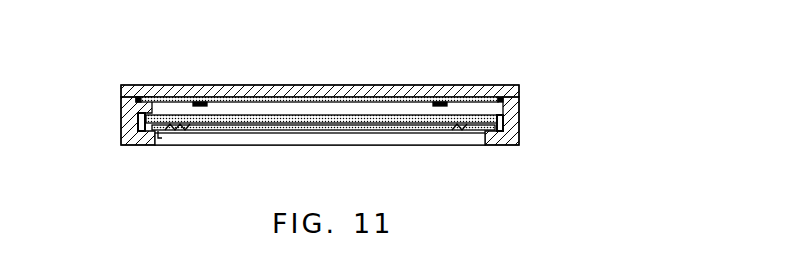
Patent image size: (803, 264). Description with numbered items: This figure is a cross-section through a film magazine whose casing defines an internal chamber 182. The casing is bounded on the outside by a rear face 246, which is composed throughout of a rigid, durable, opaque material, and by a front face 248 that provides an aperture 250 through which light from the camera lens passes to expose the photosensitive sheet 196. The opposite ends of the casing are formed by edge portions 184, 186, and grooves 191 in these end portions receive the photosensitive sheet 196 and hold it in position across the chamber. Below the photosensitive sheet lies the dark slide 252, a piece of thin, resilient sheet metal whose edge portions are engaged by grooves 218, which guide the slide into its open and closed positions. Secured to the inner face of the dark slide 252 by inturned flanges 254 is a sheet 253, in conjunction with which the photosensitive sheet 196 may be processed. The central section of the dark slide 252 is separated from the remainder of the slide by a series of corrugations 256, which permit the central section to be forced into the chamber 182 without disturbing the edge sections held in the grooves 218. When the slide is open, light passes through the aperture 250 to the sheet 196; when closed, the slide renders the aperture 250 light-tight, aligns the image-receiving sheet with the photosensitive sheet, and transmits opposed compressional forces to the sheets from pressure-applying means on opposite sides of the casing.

The grooves 191 is at (121, 91).
The rear face 246 is at (329, 88).
The edge portion 184 is at (110, 119).
The edge portion 186 is at (531, 110).
The photosensitive sheet 196 is at (250, 94).
The inturned flanges 254 is at (152, 112).
The chamber 182 is at (173, 108).
The sheet 253 is at (248, 130).
The dark slide 252 is at (285, 130).
The corrugations 256 is at (183, 130).
The grooves 218 is at (137, 128).
The front face 248 is at (367, 142).
The aperture 250 is at (160, 136).